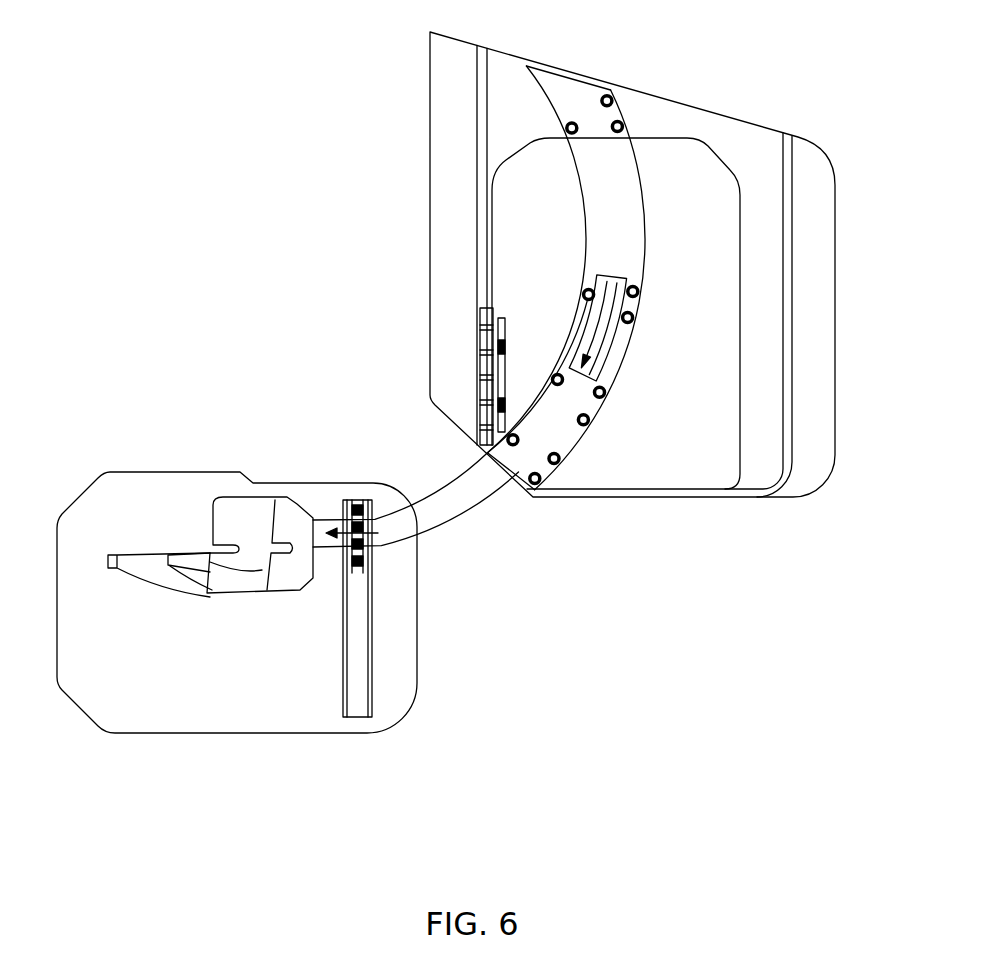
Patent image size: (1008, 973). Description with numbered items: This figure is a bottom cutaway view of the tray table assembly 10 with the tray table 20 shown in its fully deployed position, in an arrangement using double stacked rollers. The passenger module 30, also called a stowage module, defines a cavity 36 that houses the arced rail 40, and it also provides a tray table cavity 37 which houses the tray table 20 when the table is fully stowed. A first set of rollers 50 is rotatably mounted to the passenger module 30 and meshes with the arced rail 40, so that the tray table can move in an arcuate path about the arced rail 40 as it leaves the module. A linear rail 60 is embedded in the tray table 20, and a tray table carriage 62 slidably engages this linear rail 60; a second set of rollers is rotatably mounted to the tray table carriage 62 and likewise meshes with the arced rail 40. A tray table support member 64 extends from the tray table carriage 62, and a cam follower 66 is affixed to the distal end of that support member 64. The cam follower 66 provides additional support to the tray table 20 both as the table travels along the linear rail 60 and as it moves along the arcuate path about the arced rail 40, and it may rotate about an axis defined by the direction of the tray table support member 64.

The tray table assembly 10 is at (152, 246).
The tray table 20 is at (103, 685).
The passenger module 30 is at (857, 438).
The cavity 36 is at (617, 187).
The tray table cavity 37 is at (725, 247).
The arced rail 40 is at (450, 509).
The first set of rollers 50 is at (640, 322).
The linear rail 60 is at (360, 688).
The tray table carriage 62 is at (342, 512).
The tray table support member 64 is at (147, 573).
The cam follower 66 is at (113, 553).